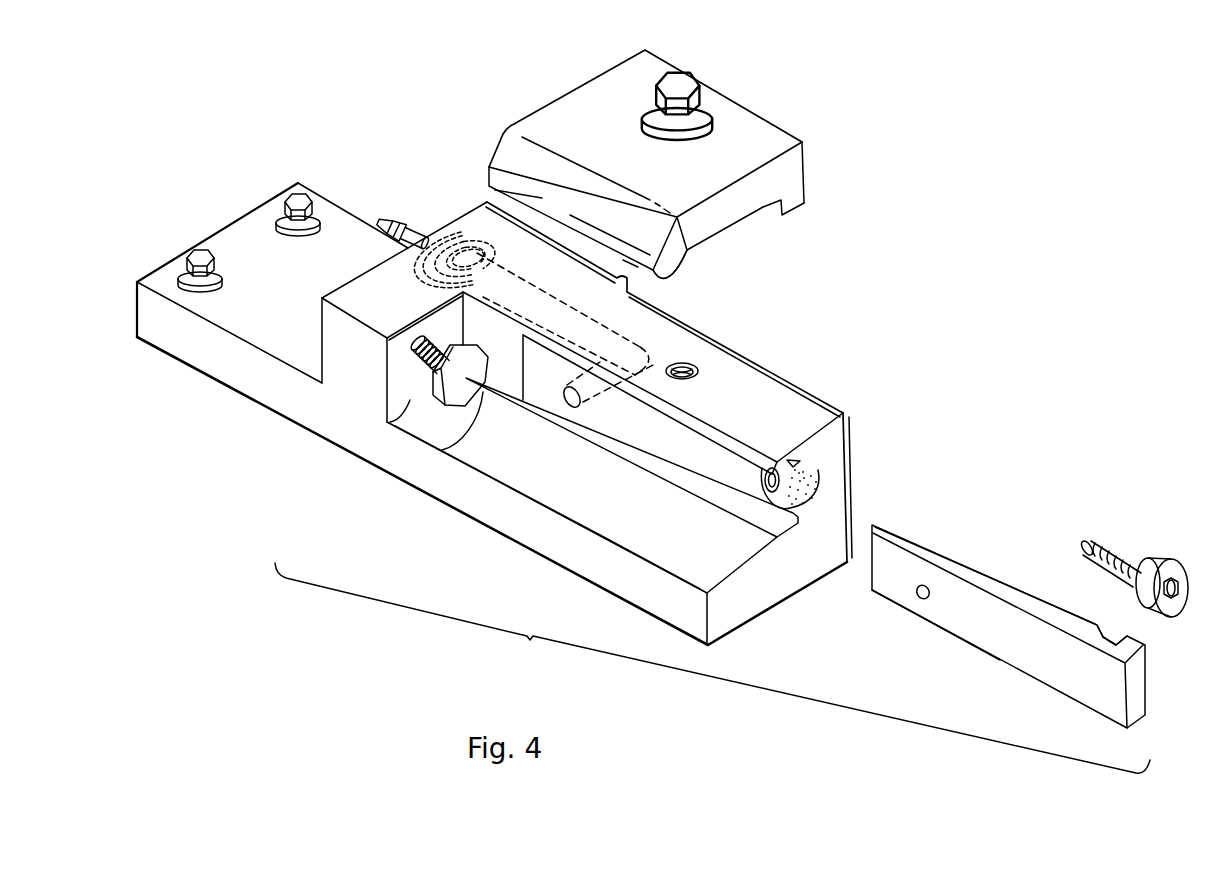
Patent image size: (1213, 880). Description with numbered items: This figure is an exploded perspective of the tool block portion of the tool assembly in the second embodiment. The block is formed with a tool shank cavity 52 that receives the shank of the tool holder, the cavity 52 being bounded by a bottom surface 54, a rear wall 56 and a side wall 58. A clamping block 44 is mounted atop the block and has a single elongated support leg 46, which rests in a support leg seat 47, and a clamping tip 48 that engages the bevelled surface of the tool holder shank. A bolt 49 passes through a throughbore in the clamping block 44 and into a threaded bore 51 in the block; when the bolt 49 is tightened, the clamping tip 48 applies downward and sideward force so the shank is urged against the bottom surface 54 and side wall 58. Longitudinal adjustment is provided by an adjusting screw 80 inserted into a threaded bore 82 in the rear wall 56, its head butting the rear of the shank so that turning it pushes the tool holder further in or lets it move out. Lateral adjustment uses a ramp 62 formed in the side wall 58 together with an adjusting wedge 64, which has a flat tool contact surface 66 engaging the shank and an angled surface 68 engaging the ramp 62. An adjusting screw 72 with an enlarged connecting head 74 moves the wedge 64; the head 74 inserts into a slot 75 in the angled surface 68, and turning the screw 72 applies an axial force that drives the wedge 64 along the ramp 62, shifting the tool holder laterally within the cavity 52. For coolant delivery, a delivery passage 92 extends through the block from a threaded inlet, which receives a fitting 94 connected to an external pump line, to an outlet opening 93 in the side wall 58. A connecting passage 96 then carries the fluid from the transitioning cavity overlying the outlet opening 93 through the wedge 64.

The clamping block 44 is at (730, 127).
The support leg 46 is at (795, 213).
The support leg seat 47 is at (780, 373).
The clamping tip 48 is at (683, 265).
The bolt 49 is at (677, 83).
The threaded bore 51 is at (693, 380).
The tool shank cavity 52 is at (652, 514).
The bottom surface 54 is at (550, 466).
The rear wall 56 is at (420, 392).
The side wall 58 is at (500, 337).
The ramp 62 is at (663, 450).
The adjusting wedge 64 is at (984, 602).
The tool contact surface 66 is at (903, 600).
The angled surface 68 is at (937, 550).
The adjusting screw 72 is at (1136, 545).
The connecting head 74 is at (1188, 574).
The slot 75 is at (1115, 633).
The adjusting screw 80 is at (487, 421).
The threaded bore 82 is at (416, 337).
The delivery passage 92 is at (650, 345).
The outlet opening 93 is at (563, 392).
The fitting 94 is at (402, 220).
The connecting passage 96 is at (922, 600).